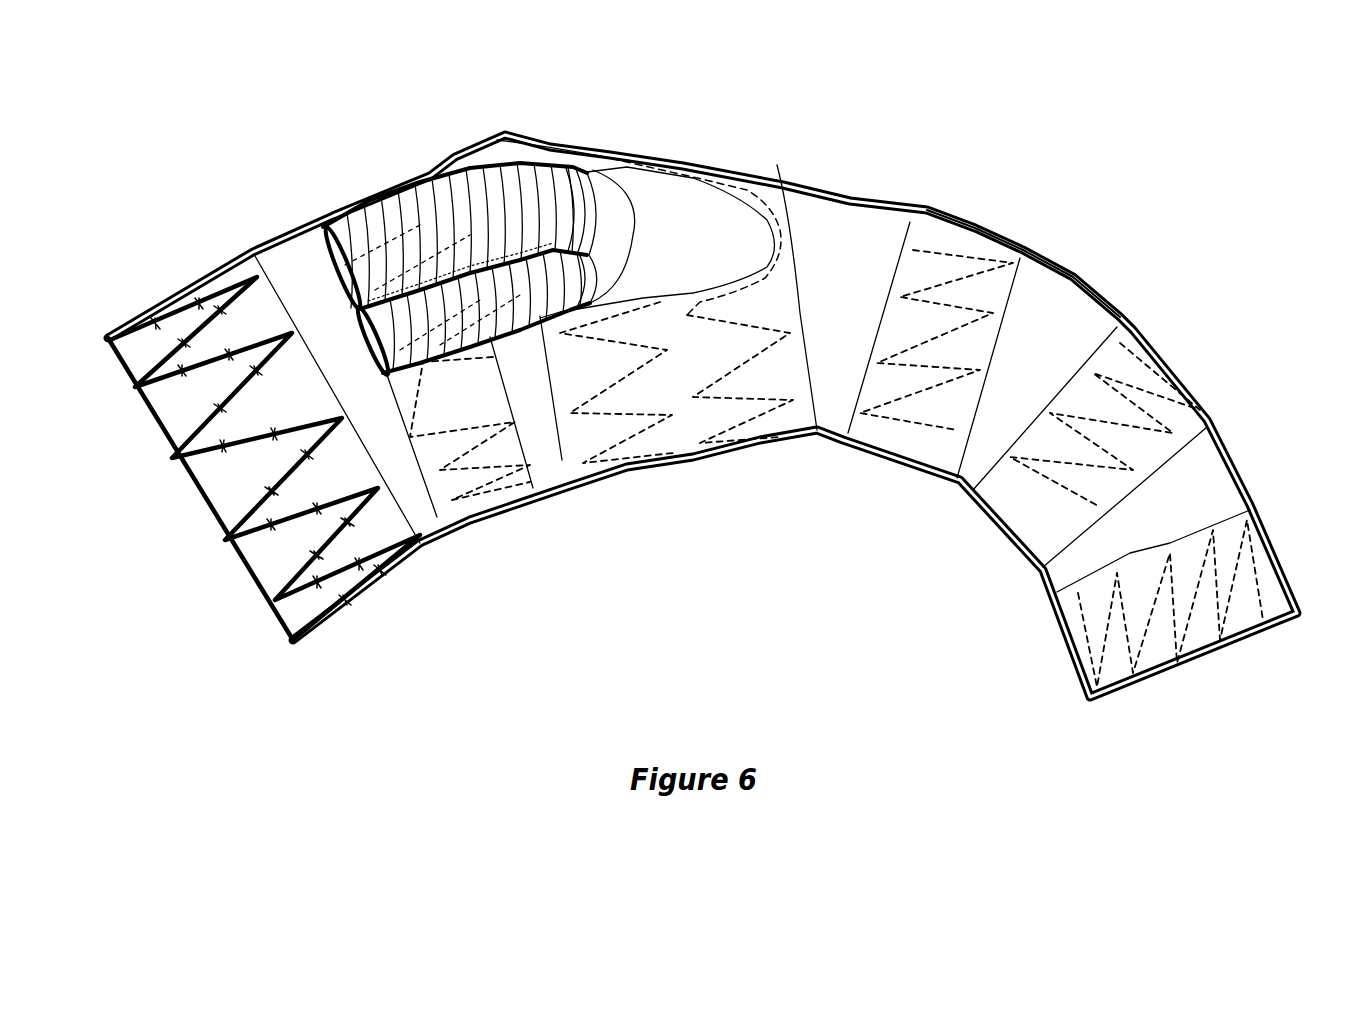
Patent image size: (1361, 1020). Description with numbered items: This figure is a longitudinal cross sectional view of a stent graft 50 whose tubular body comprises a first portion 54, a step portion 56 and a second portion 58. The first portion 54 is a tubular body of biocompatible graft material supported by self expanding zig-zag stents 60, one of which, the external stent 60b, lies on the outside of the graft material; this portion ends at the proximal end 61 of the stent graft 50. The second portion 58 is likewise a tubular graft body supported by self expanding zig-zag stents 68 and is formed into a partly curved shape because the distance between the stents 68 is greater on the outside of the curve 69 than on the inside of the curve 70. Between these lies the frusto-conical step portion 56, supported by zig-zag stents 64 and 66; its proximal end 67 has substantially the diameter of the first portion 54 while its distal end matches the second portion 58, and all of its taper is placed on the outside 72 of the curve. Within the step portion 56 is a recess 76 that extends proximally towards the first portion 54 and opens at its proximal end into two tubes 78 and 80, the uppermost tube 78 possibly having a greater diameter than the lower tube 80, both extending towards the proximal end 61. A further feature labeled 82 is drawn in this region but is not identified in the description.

The stent graft 50 is at (912, 658).
The first portion 54 is at (102, 325).
The step portion 56 is at (490, 123).
The second portion 58 is at (1303, 613).
The self expanding zig-zag stents 60 is at (355, 568).
The external stent 60b is at (502, 493).
The proximal end 61 is at (200, 527).
The self expanding zig-zag stent 64 is at (620, 445).
The self expanding zig-zag stent 66 is at (730, 400).
The proximal end of step portion 67 is at (555, 453).
The self expanding zig-zag stents 68 is at (907, 420).
The outside of the curve 69 is at (1073, 275).
The inside of the curve 70 is at (960, 485).
The outside of the curve 72 is at (777, 165).
The recess 76 is at (690, 230).
The tube 78 is at (385, 215).
The tube 80 is at (575, 240).
The tube junction 82 is at (460, 200).